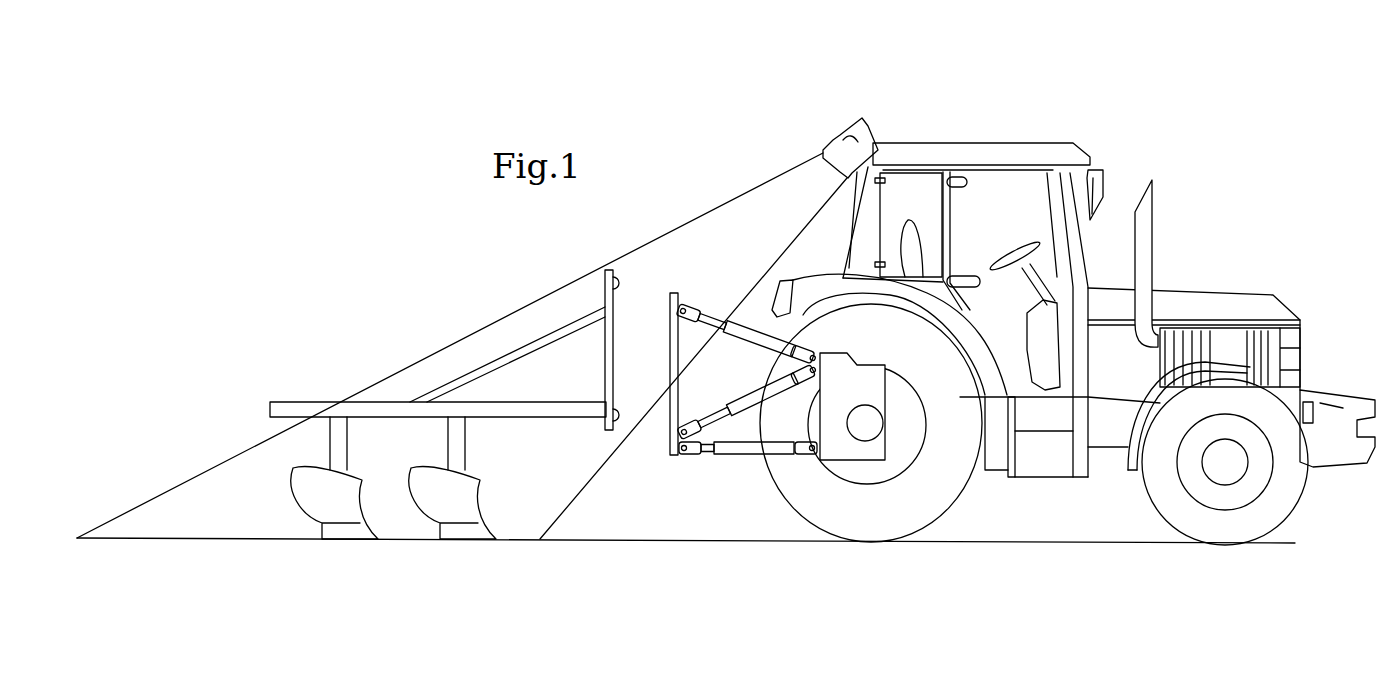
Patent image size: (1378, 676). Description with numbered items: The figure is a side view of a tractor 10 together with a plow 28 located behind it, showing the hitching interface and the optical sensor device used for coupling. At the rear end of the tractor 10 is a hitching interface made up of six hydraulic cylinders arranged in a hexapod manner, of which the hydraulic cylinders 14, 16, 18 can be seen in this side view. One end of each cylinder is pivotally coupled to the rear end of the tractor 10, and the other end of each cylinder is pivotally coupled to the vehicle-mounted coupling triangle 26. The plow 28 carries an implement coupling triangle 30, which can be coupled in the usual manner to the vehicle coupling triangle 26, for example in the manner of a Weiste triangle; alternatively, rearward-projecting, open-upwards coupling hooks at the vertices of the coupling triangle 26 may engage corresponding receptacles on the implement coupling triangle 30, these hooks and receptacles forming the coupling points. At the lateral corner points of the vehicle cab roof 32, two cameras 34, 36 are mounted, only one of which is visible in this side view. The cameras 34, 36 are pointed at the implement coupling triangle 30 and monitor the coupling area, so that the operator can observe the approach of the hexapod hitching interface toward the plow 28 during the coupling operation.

The tractor 10 is at (1102, 82).
The hydraulic cylinder 14 is at (728, 447).
The hydraulic cylinder 16 is at (762, 395).
The hydraulic cylinder 18 is at (767, 337).
The coupling triangle 26 is at (660, 453).
The plow 28 is at (401, 318).
The implement coupling triangle 30 is at (607, 393).
The vehicle cab roof 32 is at (893, 160).
The camera 34 is at (840, 136).
The camera 36 is at (850, 139).